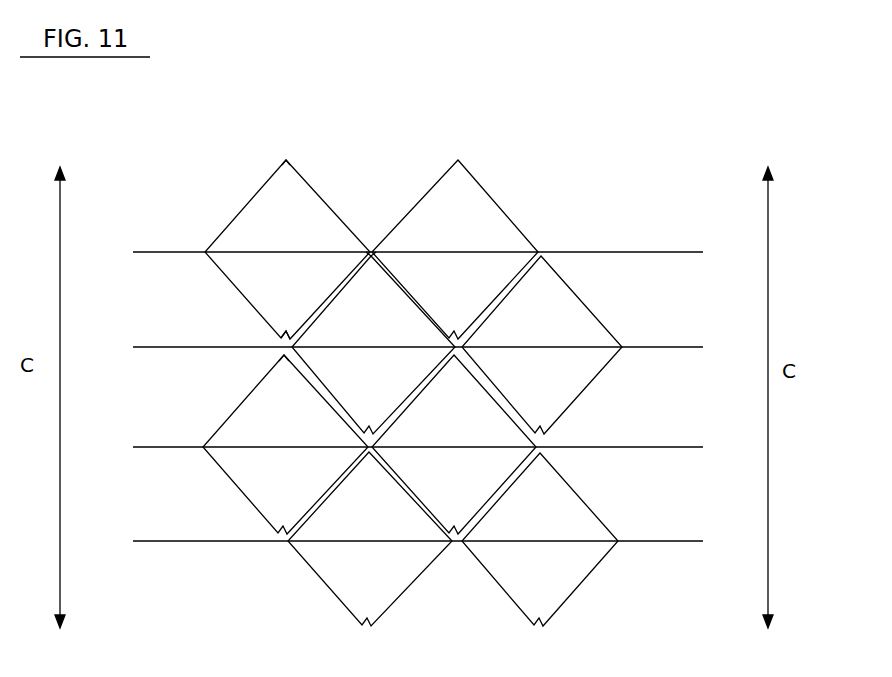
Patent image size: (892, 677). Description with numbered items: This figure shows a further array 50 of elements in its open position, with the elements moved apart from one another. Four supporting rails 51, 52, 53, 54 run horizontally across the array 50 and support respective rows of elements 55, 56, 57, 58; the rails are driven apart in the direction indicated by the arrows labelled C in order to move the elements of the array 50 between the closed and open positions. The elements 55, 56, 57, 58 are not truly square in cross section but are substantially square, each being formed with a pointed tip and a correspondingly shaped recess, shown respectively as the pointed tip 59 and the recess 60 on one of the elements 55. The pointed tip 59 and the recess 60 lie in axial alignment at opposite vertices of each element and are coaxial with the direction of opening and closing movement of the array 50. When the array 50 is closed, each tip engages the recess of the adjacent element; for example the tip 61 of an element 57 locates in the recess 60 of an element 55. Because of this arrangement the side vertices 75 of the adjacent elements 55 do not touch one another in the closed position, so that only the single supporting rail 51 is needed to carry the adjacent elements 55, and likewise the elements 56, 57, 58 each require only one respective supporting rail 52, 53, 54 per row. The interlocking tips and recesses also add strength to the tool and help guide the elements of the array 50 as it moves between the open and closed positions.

The array 50 is at (490, 129).
The supporting rail 51 is at (442, 240).
The supporting rail 52 is at (442, 347).
The supporting rail 53 is at (442, 461).
The supporting rail 54 is at (442, 560).
The elements 55 is at (371, 249).
The elements 56 is at (457, 345).
The elements 57 is at (369, 444).
The elements 58 is at (453, 539).
The pointed tip 59 is at (290, 163).
The recess 60 is at (278, 339).
The tip 61 is at (283, 372).
The vertices 75 is at (368, 251).